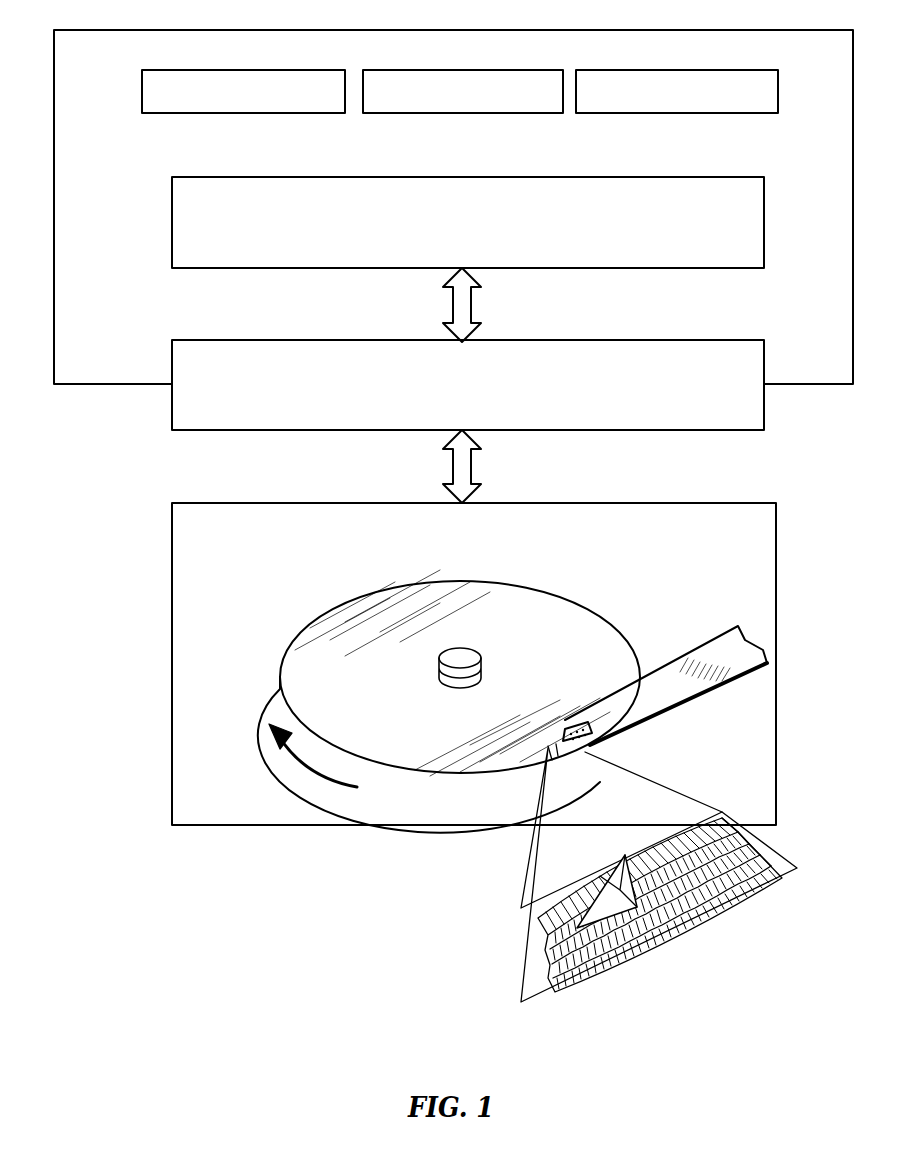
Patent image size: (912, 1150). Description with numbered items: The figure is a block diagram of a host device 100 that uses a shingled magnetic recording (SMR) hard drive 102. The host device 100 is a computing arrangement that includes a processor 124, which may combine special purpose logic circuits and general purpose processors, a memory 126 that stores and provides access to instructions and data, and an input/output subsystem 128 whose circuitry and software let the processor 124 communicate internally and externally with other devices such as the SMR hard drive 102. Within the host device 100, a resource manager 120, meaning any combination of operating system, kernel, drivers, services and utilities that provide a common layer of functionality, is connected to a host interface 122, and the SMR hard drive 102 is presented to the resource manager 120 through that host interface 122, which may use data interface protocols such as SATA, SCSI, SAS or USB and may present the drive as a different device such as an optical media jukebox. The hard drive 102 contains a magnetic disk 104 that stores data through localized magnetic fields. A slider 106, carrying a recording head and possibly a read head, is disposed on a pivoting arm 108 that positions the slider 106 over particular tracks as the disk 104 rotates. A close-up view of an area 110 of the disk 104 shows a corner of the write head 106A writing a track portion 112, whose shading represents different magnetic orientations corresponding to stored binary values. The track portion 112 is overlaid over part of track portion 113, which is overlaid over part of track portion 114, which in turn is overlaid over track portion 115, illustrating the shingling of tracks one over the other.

The host device 100 is at (100, 32).
The SMR hard drive 102 is at (180, 503).
The magnetic disk 104 is at (503, 595).
The slider 106 is at (580, 728).
The write head 106A is at (615, 868).
The pivoting arm 108 is at (725, 640).
The area 110 is at (565, 756).
The track portion 112 is at (737, 828).
The track portion 113 is at (762, 852).
The track portion 114 is at (775, 860).
The track portion 115 is at (782, 868).
The resource manager 120 is at (196, 182).
The host interface 122 is at (193, 343).
The processor 124 is at (172, 70).
The memory 126 is at (403, 70).
The input/output subsystem 128 is at (614, 70).